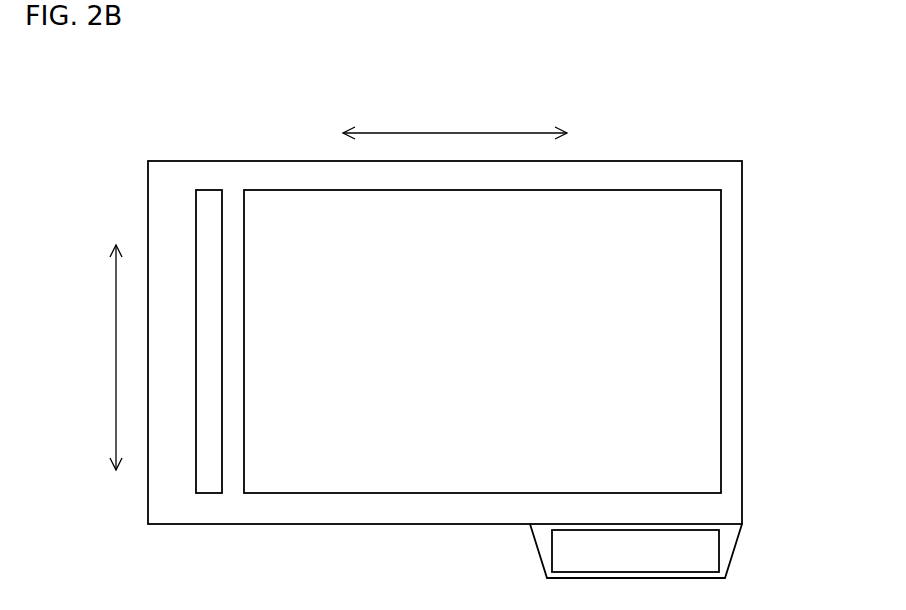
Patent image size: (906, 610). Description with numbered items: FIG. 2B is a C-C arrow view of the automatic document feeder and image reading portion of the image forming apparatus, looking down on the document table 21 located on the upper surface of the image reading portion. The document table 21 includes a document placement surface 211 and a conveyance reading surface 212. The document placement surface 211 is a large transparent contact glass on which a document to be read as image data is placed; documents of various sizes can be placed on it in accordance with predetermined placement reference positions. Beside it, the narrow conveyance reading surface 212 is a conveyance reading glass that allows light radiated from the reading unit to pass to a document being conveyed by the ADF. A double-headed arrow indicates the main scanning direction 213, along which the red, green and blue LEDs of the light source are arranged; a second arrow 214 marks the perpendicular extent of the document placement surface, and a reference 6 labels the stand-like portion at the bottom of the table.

The document table 21 is at (380, 524).
The document placement surface 211 is at (300, 493).
The conveyance reading surface 212 is at (205, 493).
The main scanning direction 213 is at (116, 356).
The width of display panel 214 is at (453, 133).
The stand 6 is at (719, 552).